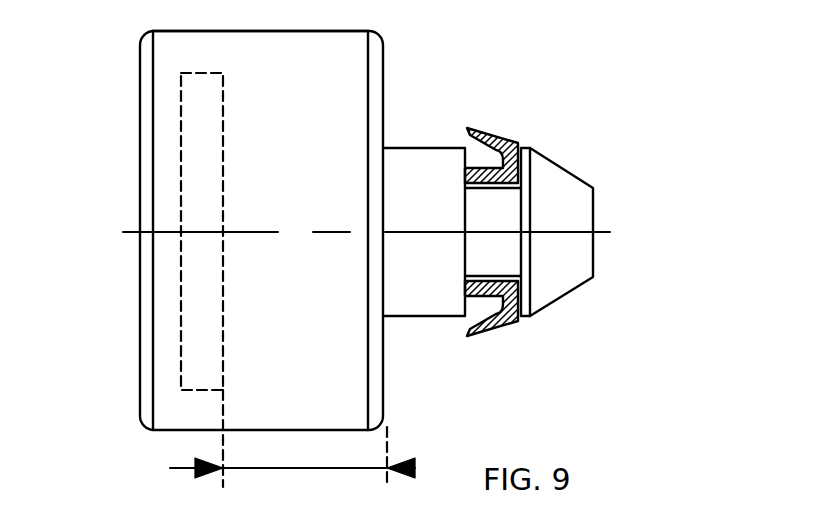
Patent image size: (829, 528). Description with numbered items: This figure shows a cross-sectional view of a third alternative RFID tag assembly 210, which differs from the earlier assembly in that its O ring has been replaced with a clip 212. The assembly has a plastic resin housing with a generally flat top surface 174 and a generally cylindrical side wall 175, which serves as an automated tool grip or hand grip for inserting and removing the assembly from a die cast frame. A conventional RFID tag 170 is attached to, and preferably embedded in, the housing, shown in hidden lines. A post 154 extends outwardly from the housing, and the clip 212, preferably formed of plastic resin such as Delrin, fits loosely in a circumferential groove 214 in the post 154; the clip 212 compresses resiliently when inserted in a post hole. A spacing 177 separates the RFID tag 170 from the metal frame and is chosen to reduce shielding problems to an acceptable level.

The post 154 is at (415, 147).
The RFID tag 170 is at (181, 100).
The flat top surface 174 is at (139, 180).
The cylindrical side wall 175 is at (290, 32).
The spacing 177 is at (275, 438).
The RFID tag assembly 210 is at (600, 102).
The clip 212 is at (483, 337).
The circumferential groove 214 is at (506, 187).